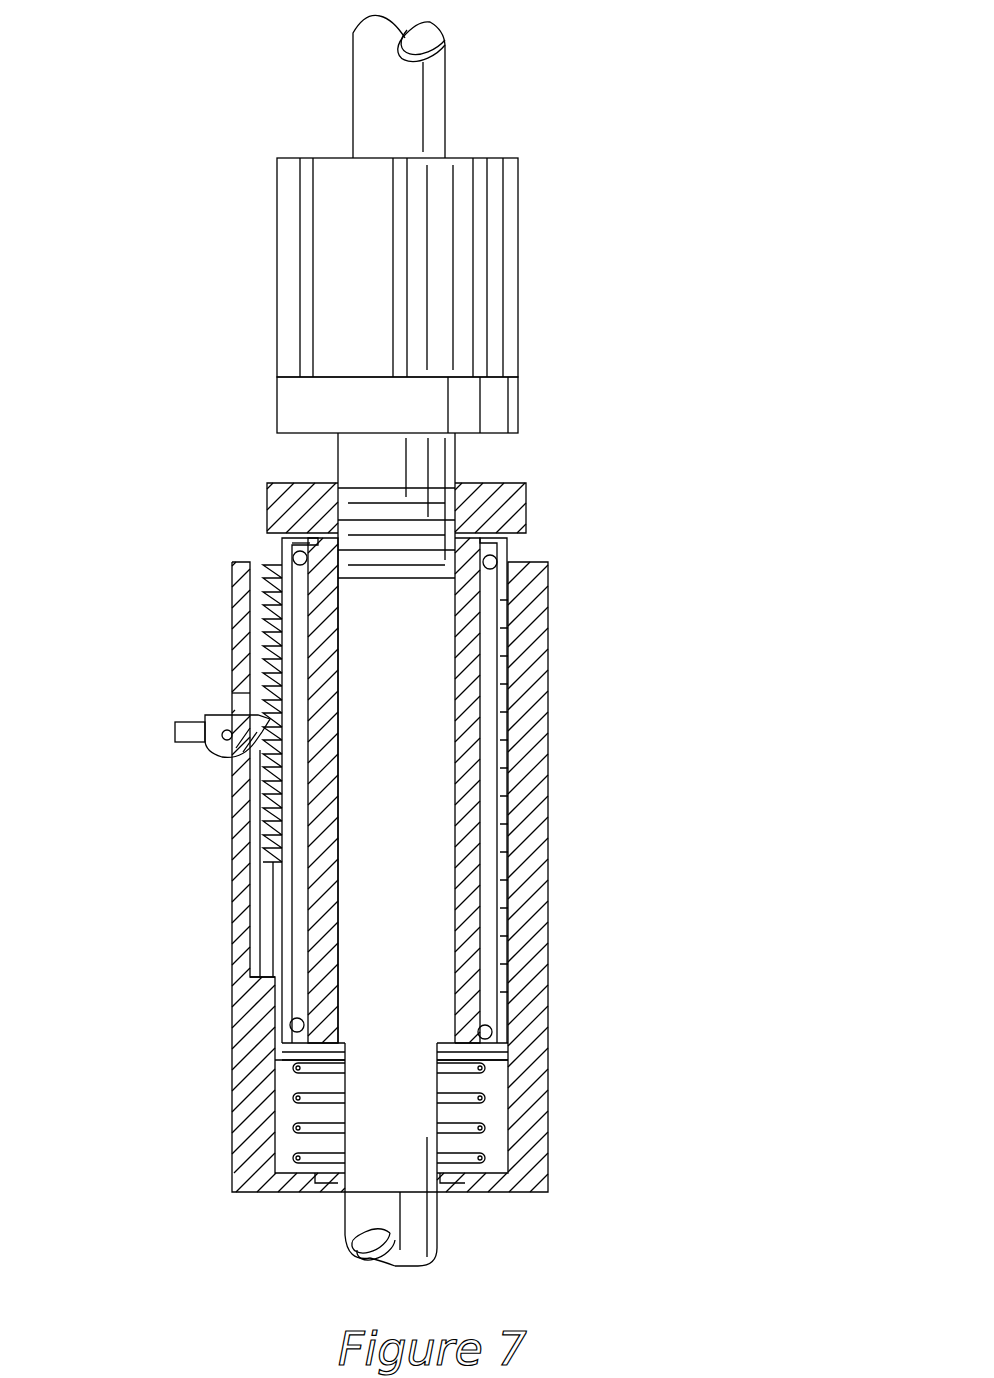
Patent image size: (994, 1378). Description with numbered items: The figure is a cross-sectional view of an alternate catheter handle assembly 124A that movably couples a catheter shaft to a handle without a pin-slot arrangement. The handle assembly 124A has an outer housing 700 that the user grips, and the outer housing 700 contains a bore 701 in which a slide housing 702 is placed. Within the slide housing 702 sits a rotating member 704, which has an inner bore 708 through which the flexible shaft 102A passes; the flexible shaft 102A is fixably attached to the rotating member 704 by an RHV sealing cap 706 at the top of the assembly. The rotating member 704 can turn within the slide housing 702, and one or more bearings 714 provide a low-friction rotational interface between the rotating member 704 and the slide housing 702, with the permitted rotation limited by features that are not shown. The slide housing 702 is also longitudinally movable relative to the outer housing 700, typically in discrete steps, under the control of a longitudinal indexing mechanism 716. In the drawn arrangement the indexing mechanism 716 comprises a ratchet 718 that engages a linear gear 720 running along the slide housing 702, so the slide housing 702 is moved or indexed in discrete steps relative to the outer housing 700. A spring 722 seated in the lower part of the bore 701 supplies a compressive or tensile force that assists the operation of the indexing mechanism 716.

The flexible shaft 102A is at (438, 133).
The RHV sealing cap 706 is at (513, 345).
The rotating member 704 is at (520, 488).
The slide housing 702 is at (283, 545).
The bearings 714 is at (495, 556).
The linear gear 720 is at (270, 665).
The ratchet 718 is at (213, 716).
The longitudinal indexing mechanism 716 is at (180, 778).
The inner bore 708 is at (445, 790).
The outer housing 700 is at (540, 905).
The catheter handle assembly 124A is at (712, 1002).
The bore 701 is at (500, 1085).
The spring 722 is at (480, 1135).